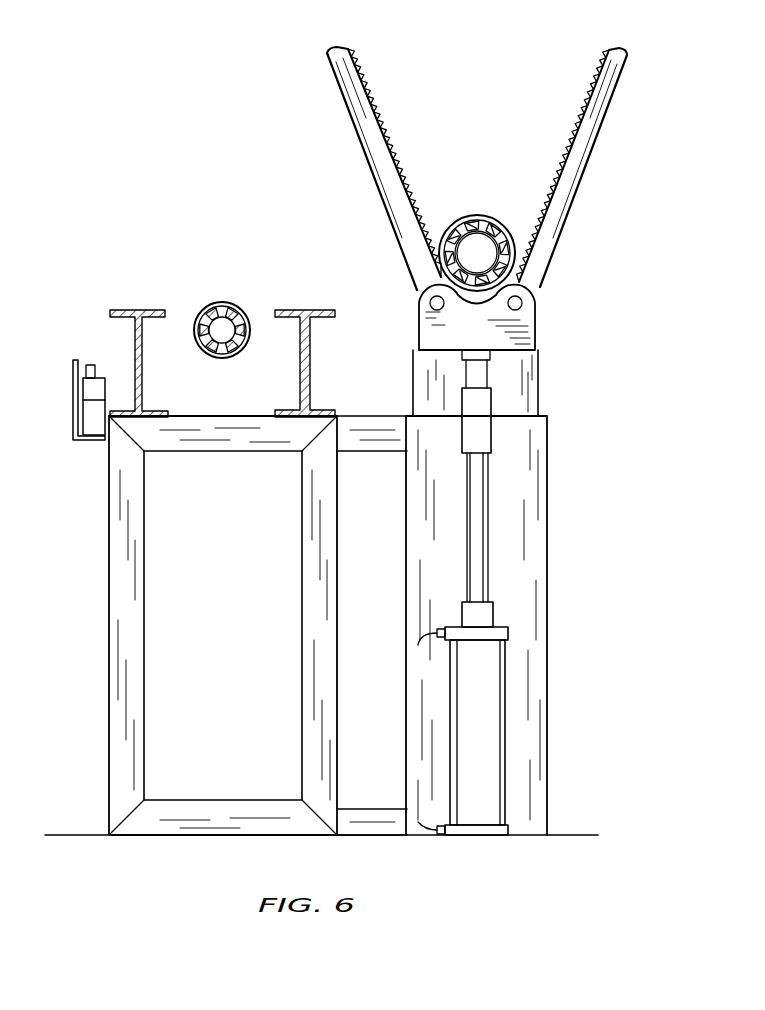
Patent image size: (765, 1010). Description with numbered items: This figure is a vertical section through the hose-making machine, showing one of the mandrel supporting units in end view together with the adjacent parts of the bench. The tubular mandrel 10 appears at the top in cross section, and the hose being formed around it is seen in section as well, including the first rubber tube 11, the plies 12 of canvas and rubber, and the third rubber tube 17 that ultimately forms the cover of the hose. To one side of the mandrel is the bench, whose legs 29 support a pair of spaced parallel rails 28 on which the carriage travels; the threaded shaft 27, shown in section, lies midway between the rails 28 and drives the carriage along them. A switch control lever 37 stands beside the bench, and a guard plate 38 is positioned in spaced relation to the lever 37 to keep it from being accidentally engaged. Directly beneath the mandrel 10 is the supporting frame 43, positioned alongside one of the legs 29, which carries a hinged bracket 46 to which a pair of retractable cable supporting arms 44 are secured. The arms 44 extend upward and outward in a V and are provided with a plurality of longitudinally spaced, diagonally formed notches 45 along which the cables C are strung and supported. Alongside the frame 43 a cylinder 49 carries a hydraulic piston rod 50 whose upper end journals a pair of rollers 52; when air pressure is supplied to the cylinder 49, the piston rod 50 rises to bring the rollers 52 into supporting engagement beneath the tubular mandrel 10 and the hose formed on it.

The tubular mandrel 10 is at (497, 227).
The first rubber tube 11 is at (446, 236).
The plies of canvas and rubber 12 is at (462, 224).
The third rubber tube 17 is at (478, 218).
The threaded shaft 27 is at (225, 303).
The rails 28 is at (137, 312).
The legs 29 is at (145, 583).
The switch control lever 37 is at (91, 365).
The guard plate 38 is at (73, 407).
The supporting frame 43 is at (545, 548).
The cable supporting arms 44 is at (364, 155).
The notches 45 is at (393, 170).
The hinged bracket 46 is at (530, 372).
The cylinder 49 is at (490, 722).
The hydraulic piston rod 50 is at (483, 527).
The rollers 52 is at (417, 285).
The cables C is at (390, 152).